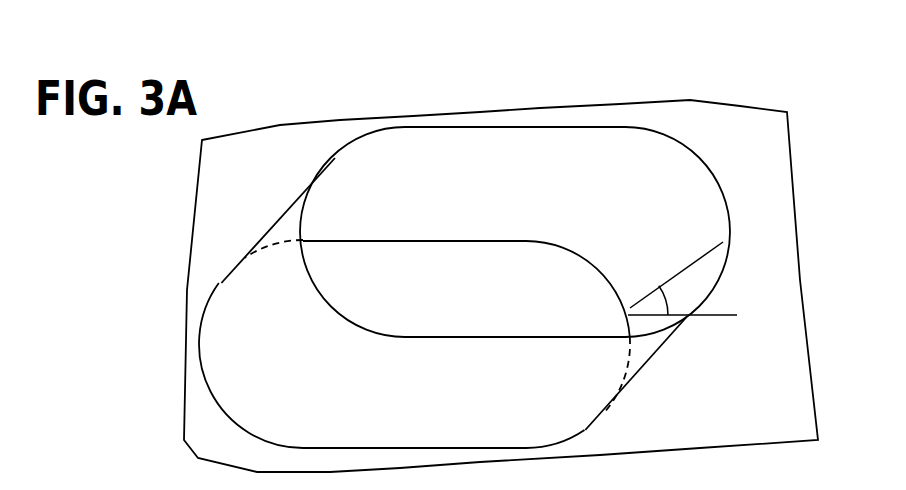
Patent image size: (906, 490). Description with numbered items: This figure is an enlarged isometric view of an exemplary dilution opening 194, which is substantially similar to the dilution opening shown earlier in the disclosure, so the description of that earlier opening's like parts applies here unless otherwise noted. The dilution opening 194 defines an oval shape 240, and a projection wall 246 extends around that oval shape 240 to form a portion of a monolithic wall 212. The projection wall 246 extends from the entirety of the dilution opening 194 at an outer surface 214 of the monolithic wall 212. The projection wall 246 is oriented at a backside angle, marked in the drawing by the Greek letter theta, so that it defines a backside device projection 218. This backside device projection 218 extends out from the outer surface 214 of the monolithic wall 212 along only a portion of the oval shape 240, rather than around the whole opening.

The backside device projection 218 is at (564, 105).
The dilution opening 194 is at (421, 252).
The oval shape 240 is at (332, 243).
The projection wall 246 is at (617, 205).
The outer surface 214 is at (747, 387).
The monolithic wall 212 is at (652, 414).